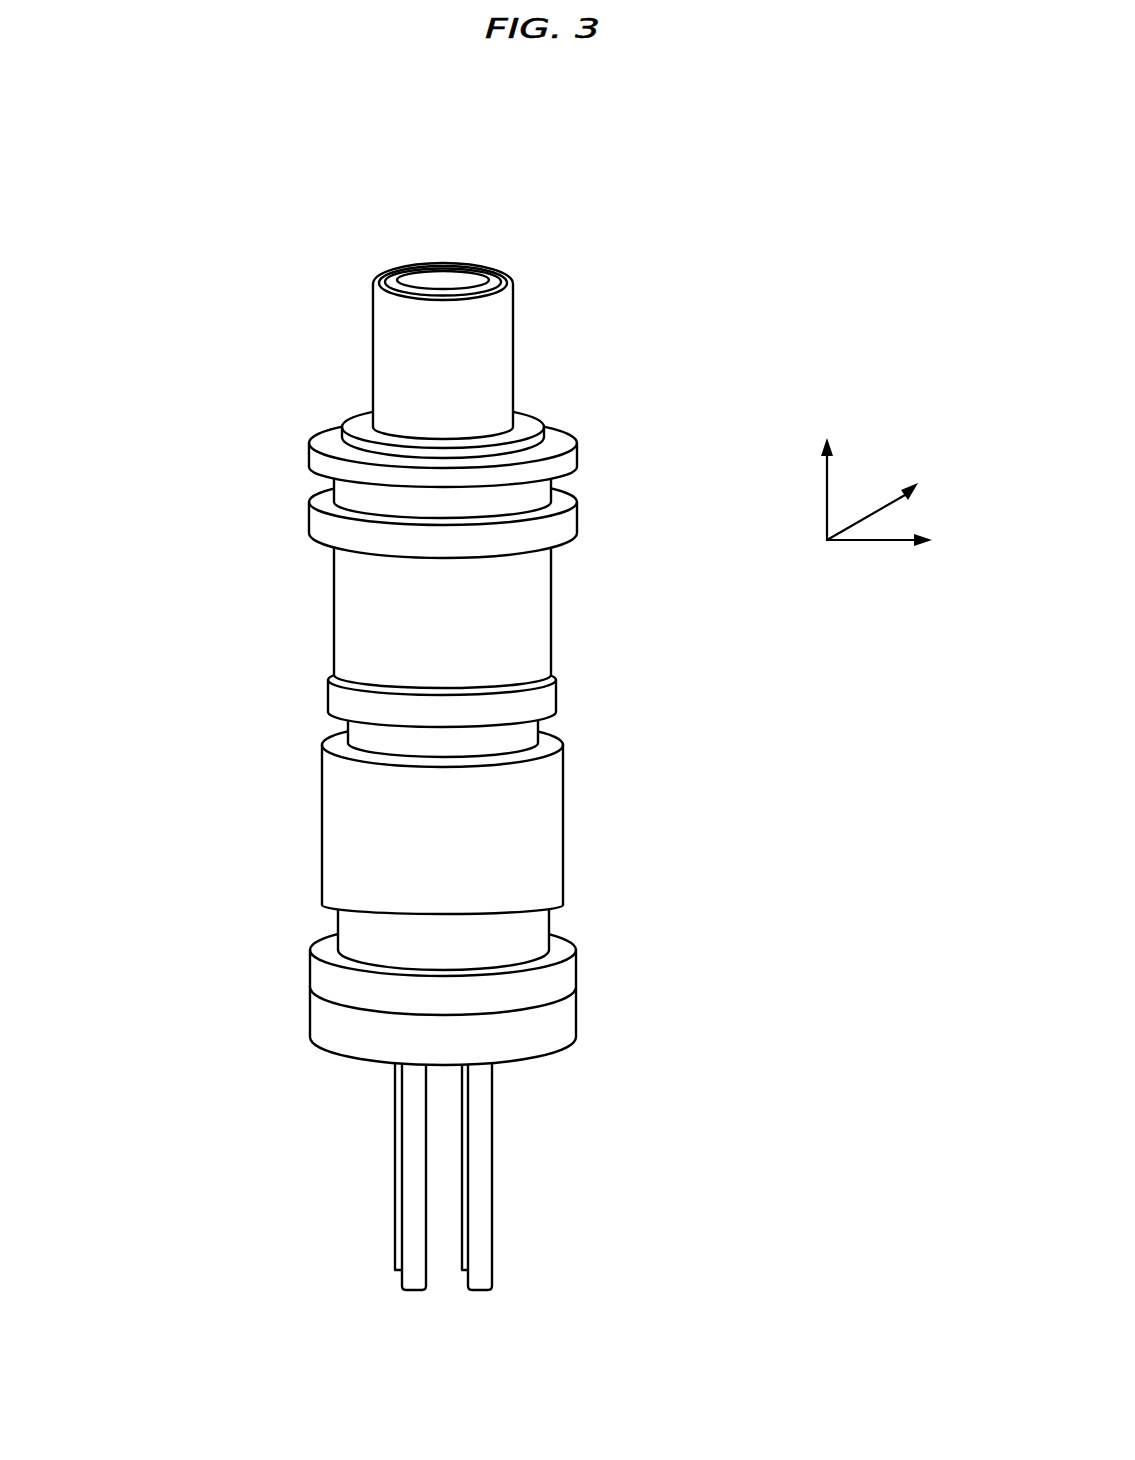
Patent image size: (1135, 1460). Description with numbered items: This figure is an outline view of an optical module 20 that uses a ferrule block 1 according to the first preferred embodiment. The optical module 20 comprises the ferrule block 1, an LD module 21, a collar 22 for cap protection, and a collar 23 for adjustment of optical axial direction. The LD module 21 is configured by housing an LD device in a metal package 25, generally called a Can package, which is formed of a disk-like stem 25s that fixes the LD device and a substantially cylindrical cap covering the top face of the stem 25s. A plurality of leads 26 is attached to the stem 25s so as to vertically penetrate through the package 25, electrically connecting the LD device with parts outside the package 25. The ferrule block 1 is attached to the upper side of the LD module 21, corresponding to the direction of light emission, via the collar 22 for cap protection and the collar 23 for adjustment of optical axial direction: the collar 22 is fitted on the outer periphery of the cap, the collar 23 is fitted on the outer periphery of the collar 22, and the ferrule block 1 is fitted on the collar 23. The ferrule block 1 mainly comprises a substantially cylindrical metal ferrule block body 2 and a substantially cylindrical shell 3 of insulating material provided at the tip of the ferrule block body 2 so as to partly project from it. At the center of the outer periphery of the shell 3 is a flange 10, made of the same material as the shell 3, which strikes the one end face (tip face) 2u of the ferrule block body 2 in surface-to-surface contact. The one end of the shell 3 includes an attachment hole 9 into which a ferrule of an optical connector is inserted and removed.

The ferrule block 1 is at (280, 702).
The ferrule block body 2 is at (552, 603).
The one end face (tip face) 2u is at (570, 440).
The shell 3 is at (513, 345).
The attachment hole 9 is at (464, 262).
The flange 10 is at (530, 422).
The optical module 20 is at (668, 274).
The LD module 21 is at (282, 1264).
The collar for cap protection 22 is at (578, 962).
The collar for adjustment of optical axial direction 23 is at (563, 785).
The package 25 is at (557, 1066).
The stem 25s is at (575, 1028).
The lead 26 is at (487, 1243).